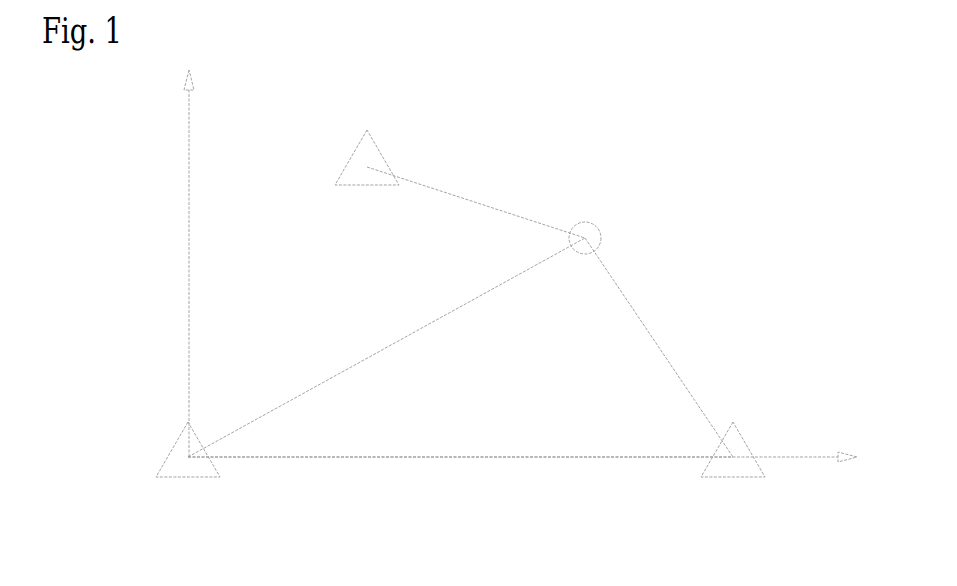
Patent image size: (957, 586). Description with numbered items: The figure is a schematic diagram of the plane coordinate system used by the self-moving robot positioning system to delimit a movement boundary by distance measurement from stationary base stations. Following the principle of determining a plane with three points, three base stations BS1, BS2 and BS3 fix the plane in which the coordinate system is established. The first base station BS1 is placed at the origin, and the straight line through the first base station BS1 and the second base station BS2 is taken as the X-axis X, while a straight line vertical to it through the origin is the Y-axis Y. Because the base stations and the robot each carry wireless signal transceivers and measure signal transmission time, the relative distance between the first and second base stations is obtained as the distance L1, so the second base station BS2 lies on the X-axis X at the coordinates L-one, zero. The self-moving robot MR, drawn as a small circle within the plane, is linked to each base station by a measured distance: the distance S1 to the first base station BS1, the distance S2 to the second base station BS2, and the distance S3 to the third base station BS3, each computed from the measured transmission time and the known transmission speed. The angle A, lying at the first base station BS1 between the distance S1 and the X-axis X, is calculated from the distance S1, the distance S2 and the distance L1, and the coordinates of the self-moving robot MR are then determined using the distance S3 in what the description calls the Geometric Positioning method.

The first base station BS1 is at (177, 471).
The second base station BS2 is at (759, 471).
The third base station BS3 is at (357, 157).
The self-moving robot MR is at (600, 227).
The distance between the self-moving robot and the first base station S1 is at (386, 347).
The distance between the self-moving robot and the second base station S2 is at (659, 347).
The distance between the self-moving robot and the third base station S3 is at (476, 202).
The distance between the first base station and the second base station L1 is at (460, 445).
The angle A is at (249, 438).
The X-axis X is at (536, 463).
The Y-axis Y is at (175, 261).